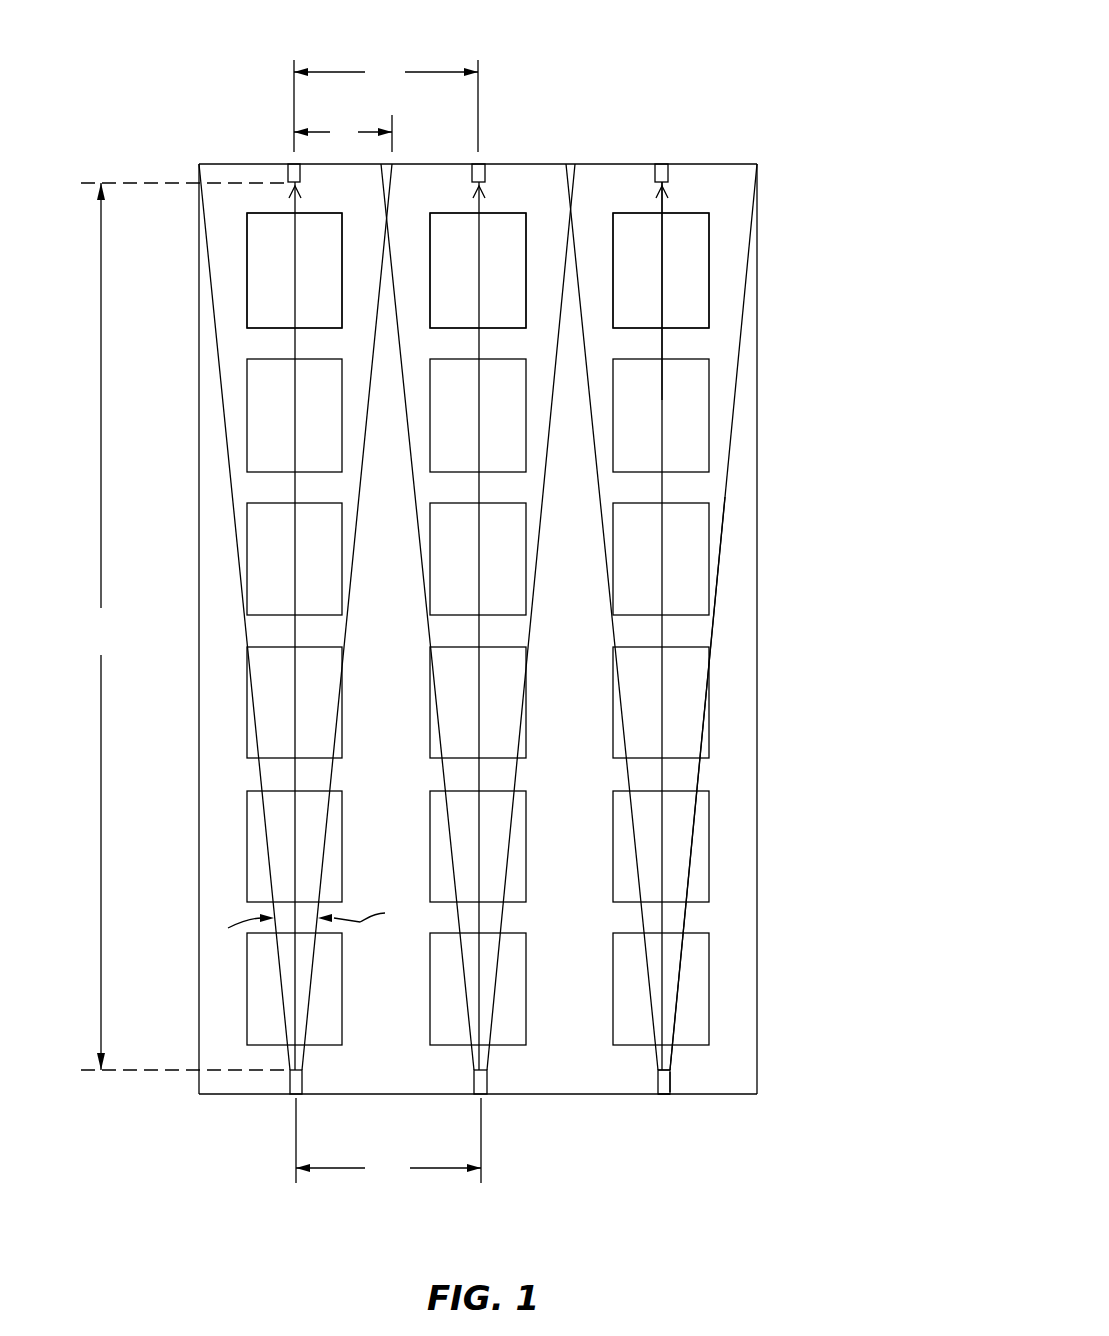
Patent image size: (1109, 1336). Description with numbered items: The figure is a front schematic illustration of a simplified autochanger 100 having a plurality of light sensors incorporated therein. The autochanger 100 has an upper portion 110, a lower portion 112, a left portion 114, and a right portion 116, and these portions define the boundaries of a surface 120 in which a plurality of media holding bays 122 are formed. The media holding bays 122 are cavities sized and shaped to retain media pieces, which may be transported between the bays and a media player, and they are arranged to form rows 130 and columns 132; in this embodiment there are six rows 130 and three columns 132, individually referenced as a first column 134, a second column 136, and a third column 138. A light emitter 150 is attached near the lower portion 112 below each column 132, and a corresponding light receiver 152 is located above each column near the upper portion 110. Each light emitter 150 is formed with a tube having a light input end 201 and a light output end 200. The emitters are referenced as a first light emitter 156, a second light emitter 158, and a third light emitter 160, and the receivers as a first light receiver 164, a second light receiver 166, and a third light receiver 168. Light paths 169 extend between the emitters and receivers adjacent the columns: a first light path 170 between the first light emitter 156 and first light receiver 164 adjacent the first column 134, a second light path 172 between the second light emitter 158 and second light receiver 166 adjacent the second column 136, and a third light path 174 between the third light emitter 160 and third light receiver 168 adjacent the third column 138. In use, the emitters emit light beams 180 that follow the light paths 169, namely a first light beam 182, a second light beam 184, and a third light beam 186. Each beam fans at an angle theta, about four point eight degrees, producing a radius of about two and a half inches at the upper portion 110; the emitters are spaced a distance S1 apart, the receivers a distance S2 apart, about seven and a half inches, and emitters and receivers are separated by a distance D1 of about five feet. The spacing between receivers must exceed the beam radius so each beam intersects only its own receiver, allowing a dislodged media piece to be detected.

The autochanger 100 is at (706, 50).
The upper portion 110 is at (212, 164).
The lower portion 112 is at (212, 1094).
The left portion 114 is at (199, 375).
The right portion 116 is at (757, 617).
The surface 120 is at (366, 772).
The media holding bays 122 is at (712, 877).
The rows 130 is at (247, 412).
The columns 132 is at (520, 1047).
The first column 134 is at (318, 213).
The second column 136 is at (501, 213).
The third column 138 is at (686, 213).
The light emitter 150 is at (680, 1082).
The light receiver 152 is at (677, 174).
The first light emitter 156 is at (290, 1085).
The second light emitter 158 is at (474, 1085).
The third light emitter 160 is at (658, 1085).
The first light receiver 164 is at (287, 176).
The second light receiver 166 is at (486, 173).
The third light receiver 168 is at (655, 176).
The light paths 169 is at (668, 344).
The first light path 170 is at (293, 834).
The second light path 172 is at (483, 915).
The third light path 174 is at (664, 833).
The light beams 180 is at (745, 492).
The first light beam 182 is at (258, 773).
The second light beam 184 is at (518, 773).
The third light beam 186 is at (700, 772).
The light output end 200 is at (672, 1070).
The light input end 201 is at (681, 1094).